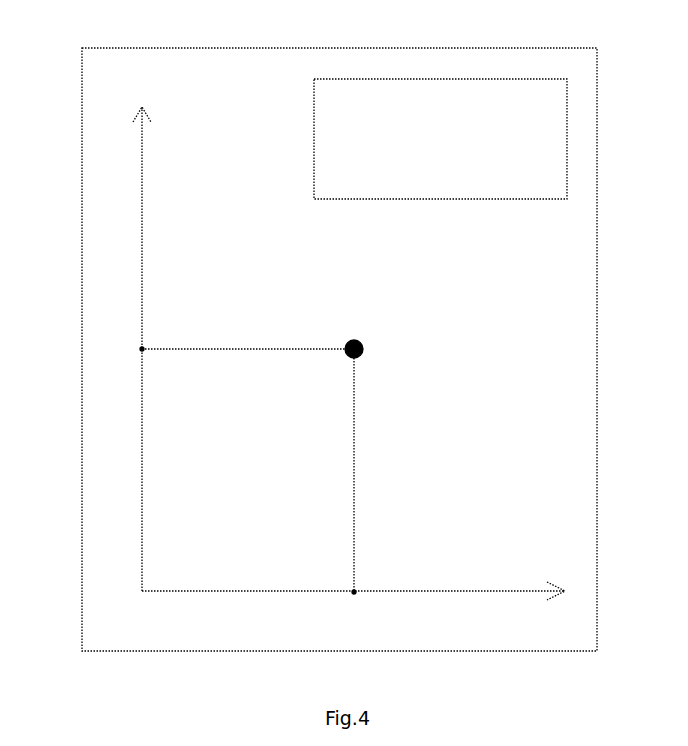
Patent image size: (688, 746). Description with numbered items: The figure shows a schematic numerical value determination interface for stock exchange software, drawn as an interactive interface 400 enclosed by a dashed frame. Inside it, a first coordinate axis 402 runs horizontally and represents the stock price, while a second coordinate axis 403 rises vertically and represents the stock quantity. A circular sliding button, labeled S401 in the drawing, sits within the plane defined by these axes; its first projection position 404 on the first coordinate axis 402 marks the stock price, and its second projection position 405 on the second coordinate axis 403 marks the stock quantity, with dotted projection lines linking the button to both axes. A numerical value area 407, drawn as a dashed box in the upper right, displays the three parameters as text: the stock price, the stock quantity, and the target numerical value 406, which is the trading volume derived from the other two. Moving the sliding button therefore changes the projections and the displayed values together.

The interactive interface 400 is at (190, 40).
The trading point (stock price / quantity) S401 is at (412, 314).
The first coordinate axis 402 is at (371, 635).
The second coordinate axis 403 is at (166, 336).
The first projection position 404 is at (412, 519).
The second projection position 405 is at (191, 307).
The target numerical value 406 is at (491, 170).
The numerical value area 407 is at (478, 104).